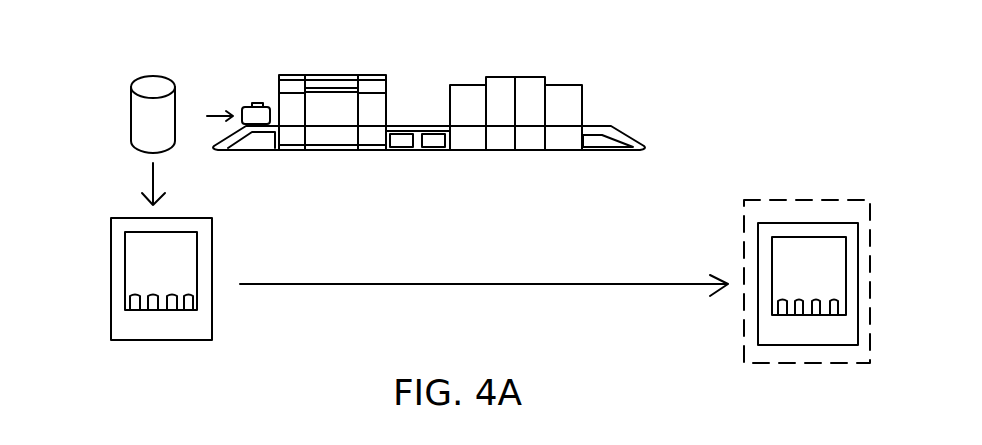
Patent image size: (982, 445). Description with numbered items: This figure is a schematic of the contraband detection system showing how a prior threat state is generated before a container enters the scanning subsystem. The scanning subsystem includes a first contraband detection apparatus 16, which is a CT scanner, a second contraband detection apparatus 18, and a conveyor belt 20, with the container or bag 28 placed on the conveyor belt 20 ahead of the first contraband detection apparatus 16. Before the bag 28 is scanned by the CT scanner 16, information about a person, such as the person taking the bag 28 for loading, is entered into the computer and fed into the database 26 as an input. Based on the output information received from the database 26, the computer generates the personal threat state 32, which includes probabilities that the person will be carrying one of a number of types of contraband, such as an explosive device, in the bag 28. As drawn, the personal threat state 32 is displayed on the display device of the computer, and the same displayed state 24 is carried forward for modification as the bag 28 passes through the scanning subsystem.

The first contraband detection apparatus 16 is at (312, 75).
The second contraband detection apparatus 18 is at (505, 75).
The conveyor belt 20 is at (240, 150).
The assembled unit 24 is at (828, 198).
The database 26 is at (142, 86).
The container or bag 28 is at (253, 104).
The personal threat state 32 is at (110, 323).